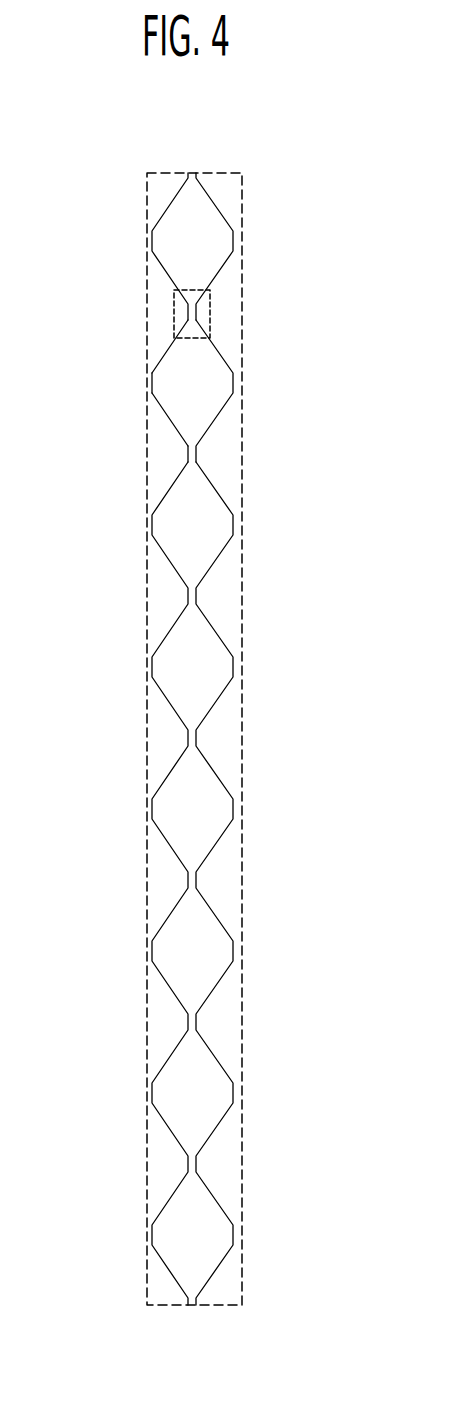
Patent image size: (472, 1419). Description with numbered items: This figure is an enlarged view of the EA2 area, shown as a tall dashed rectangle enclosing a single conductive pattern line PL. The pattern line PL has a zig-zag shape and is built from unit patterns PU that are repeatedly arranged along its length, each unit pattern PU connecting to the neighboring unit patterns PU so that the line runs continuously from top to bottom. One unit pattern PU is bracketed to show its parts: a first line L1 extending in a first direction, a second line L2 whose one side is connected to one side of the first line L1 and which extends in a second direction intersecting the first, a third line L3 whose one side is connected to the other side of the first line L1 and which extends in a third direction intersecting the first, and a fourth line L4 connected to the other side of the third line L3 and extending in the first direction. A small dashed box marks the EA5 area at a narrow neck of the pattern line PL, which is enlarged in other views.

The EA2 area EA2 is at (216, 152).
The EA5 area EA5 is at (212, 313).
The pattern line PL is at (228, 485).
The unit pattern PU is at (98, 328).
The first line L1 is at (150, 383).
The second line L2 is at (171, 345).
The third line L3 is at (170, 420).
The fourth line L4 is at (188, 457).